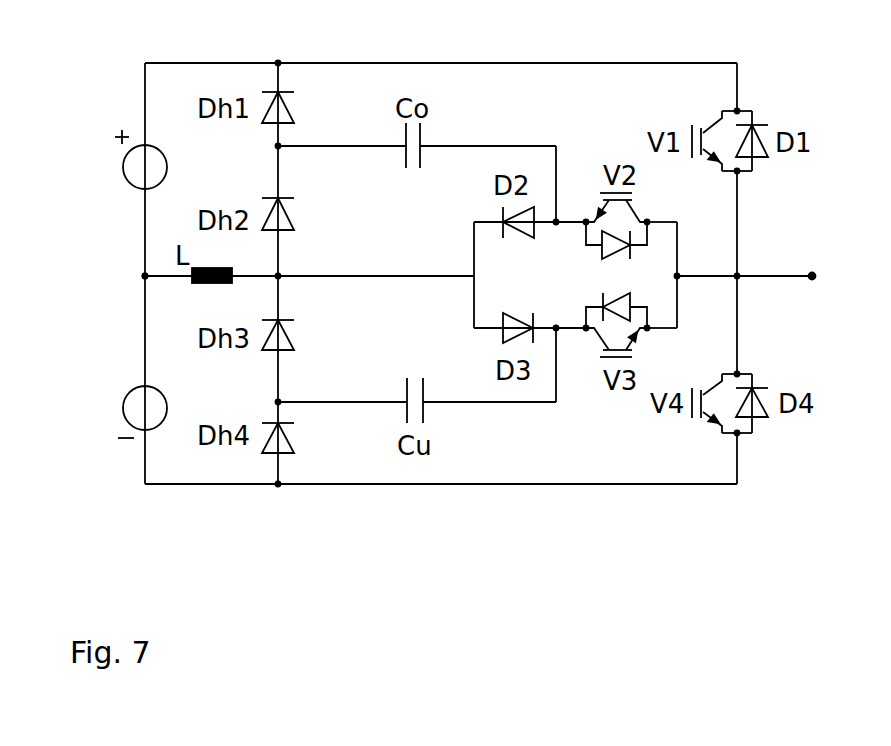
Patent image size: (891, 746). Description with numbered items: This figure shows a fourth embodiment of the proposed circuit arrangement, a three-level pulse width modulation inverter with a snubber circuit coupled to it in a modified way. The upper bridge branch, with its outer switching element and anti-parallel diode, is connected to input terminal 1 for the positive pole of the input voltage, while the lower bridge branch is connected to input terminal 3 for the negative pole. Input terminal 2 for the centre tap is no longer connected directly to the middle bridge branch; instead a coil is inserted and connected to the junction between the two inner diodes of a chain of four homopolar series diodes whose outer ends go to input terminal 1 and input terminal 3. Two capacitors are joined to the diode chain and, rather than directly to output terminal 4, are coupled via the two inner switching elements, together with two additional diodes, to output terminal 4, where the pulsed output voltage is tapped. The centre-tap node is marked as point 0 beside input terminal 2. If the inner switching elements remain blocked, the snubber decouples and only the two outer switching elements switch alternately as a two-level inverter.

The input terminal 1 is at (135, 59).
The input terminal 2 is at (140, 257).
The input terminal 3 is at (140, 493).
The output terminal 4 is at (764, 274).
The zero potential point 0 is at (136, 274).